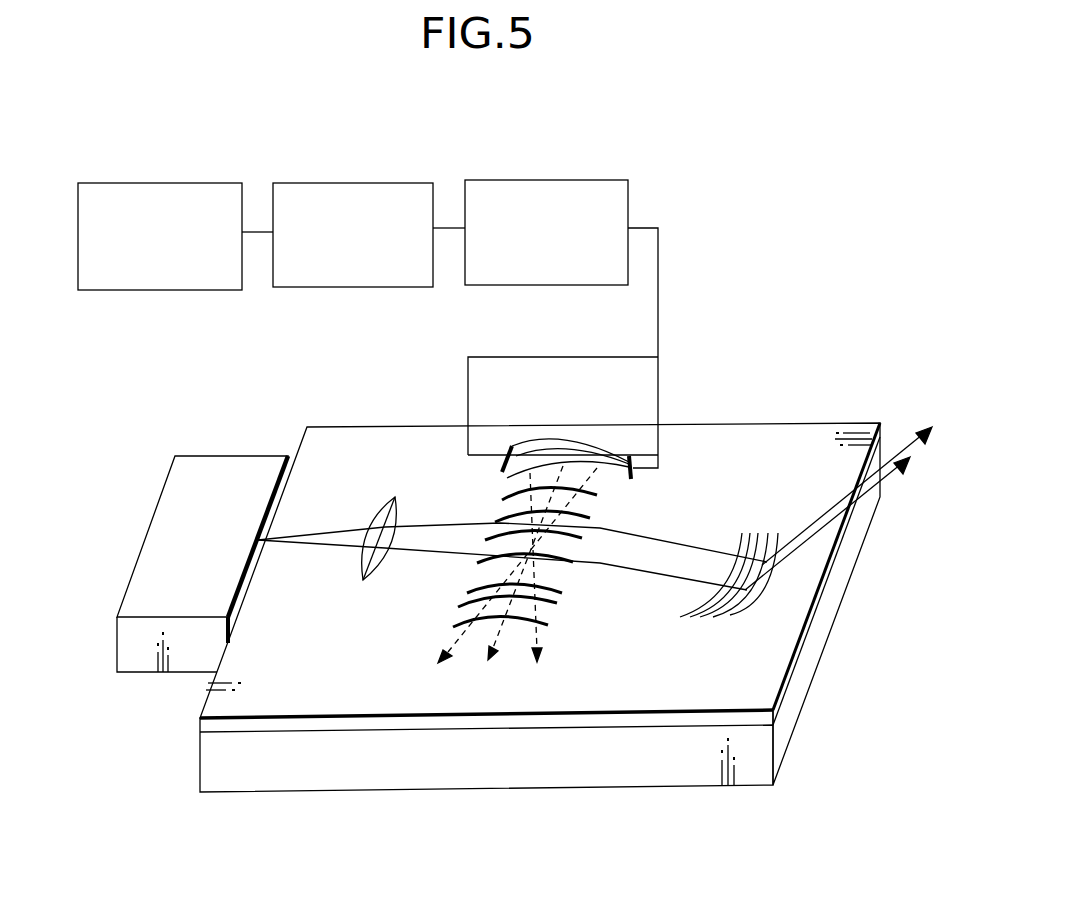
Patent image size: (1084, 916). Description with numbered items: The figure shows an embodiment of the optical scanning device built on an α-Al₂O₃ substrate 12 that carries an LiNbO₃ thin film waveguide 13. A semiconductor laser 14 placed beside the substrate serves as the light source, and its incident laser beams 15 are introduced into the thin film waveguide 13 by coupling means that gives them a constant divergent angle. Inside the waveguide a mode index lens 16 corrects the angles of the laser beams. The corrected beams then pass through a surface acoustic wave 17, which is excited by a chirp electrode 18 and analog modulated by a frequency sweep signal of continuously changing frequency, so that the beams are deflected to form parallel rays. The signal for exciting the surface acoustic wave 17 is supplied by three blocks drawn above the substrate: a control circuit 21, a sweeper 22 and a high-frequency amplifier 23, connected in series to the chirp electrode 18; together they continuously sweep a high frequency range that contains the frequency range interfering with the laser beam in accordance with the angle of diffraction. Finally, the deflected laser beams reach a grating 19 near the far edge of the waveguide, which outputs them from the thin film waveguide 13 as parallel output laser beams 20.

The α-Al₂O₃ substrate 12 is at (297, 772).
The LiNbO₃ thin film waveguide 13 is at (652, 722).
The semiconductor laser 14 is at (232, 456).
The incident laser beams 15 is at (512, 544).
The mode index lens 16 is at (392, 523).
The surface acoustic wave 17 is at (495, 581).
The chirp electrode 18 is at (563, 353).
The grating 19 is at (736, 558).
The output laser beams 20 is at (849, 490).
The control circuit 21 is at (155, 183).
The sweeper 22 is at (350, 183).
The high-frequency amplifier 23 is at (545, 180).